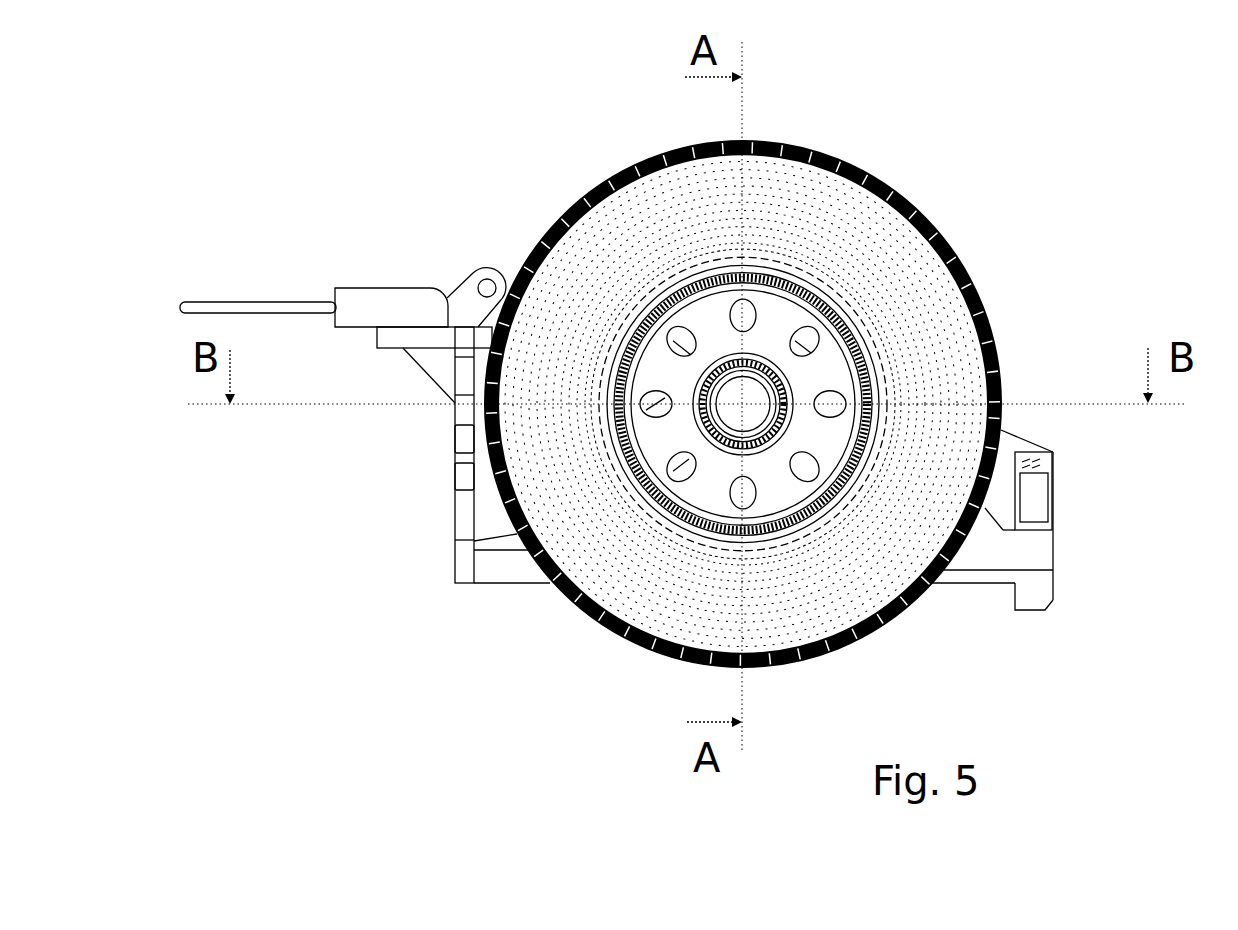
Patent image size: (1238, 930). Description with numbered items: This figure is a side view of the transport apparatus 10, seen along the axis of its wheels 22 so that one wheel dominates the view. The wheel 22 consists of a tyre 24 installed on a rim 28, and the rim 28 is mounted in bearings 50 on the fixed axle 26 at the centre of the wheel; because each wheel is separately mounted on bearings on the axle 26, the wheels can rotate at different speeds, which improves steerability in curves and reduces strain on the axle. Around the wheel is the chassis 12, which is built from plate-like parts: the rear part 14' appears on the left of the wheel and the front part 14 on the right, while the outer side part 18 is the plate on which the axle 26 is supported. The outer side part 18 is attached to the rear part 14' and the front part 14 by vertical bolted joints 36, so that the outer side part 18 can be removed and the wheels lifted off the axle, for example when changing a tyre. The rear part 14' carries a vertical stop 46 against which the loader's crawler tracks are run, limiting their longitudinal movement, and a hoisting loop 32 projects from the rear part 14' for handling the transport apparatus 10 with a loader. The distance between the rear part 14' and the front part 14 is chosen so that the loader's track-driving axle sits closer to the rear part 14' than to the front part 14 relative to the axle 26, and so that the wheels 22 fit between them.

The transport apparatus 10 is at (973, 112).
The chassis 12 is at (456, 262).
The front part 14 is at (1075, 515).
The rear part 14' is at (451, 455).
The outer side part 18 is at (987, 548).
The wheel 22 is at (593, 647).
The tyre 24 is at (932, 283).
The axle 26 is at (786, 404).
The rim 28 is at (822, 375).
The hoisting loop 32 is at (217, 302).
The vertical bolted joint 36 is at (1047, 455).
The vertical stop 46 is at (488, 268).
The bearing 50 is at (757, 358).